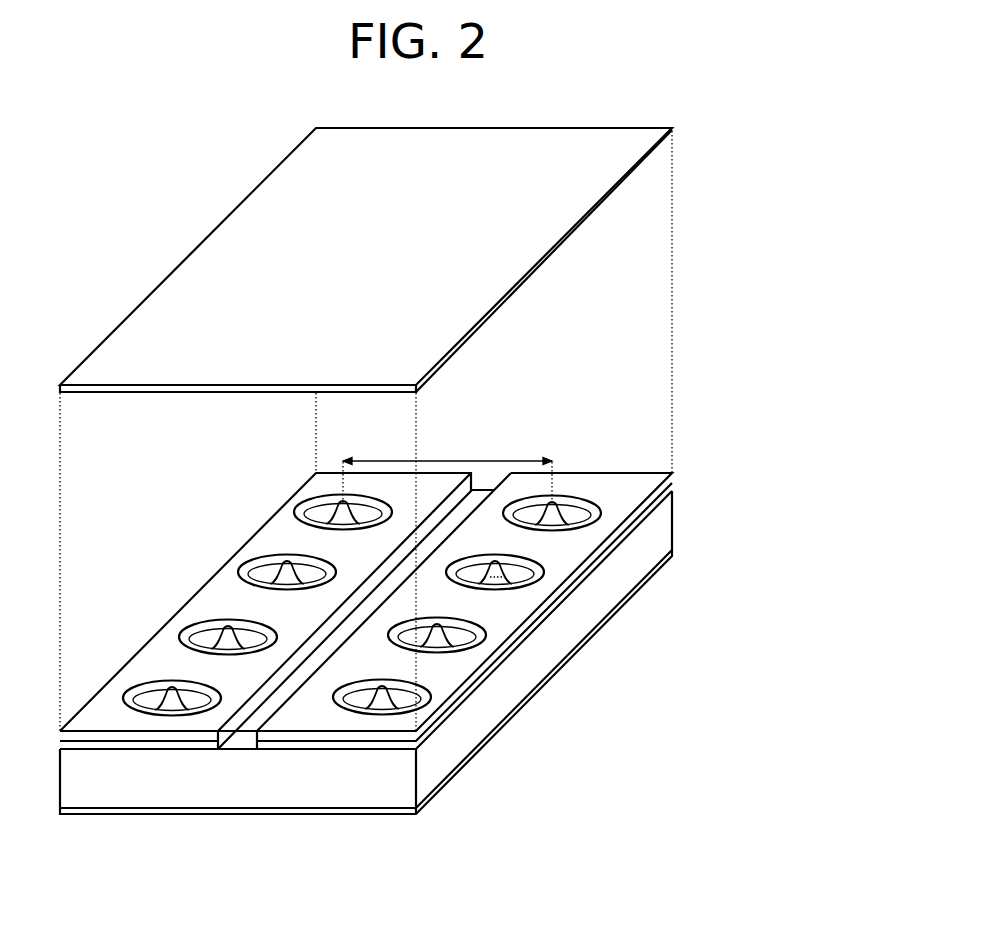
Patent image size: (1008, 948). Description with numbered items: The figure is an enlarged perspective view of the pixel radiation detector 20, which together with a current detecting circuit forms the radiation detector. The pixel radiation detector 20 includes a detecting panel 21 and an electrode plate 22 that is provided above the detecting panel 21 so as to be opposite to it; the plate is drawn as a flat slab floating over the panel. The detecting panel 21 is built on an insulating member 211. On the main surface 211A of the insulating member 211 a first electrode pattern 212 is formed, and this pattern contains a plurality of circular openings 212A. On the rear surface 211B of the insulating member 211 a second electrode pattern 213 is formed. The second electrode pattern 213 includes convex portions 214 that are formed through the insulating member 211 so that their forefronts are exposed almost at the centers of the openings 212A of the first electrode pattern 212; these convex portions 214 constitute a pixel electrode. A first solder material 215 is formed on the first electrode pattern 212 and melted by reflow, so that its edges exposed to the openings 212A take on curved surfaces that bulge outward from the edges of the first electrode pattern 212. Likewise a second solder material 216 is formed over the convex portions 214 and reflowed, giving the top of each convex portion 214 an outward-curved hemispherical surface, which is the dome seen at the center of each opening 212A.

The pixel radiation detector 20 is at (708, 222).
The detecting panel 21 is at (708, 486).
The electrode plate 22 is at (580, 137).
The insulating member 211 is at (676, 490).
The main surface 211A is at (662, 485).
The rear surface 211B is at (665, 553).
The first electrode pattern 212 is at (613, 543).
The circular openings 212A is at (527, 578).
The second electrode pattern 213 is at (552, 668).
The convex portions 214 is at (497, 578).
The first solder material 215 is at (275, 548).
The second solder material 216 is at (342, 502).